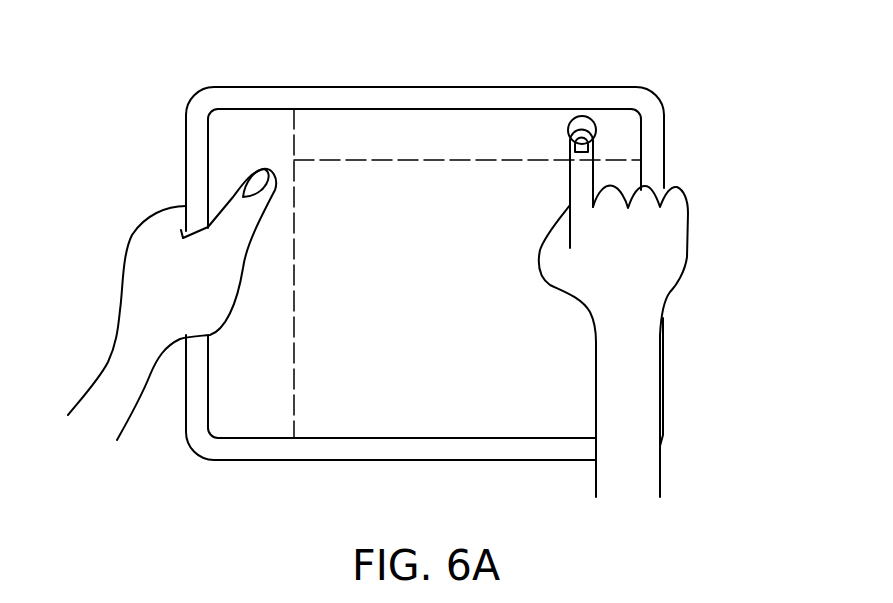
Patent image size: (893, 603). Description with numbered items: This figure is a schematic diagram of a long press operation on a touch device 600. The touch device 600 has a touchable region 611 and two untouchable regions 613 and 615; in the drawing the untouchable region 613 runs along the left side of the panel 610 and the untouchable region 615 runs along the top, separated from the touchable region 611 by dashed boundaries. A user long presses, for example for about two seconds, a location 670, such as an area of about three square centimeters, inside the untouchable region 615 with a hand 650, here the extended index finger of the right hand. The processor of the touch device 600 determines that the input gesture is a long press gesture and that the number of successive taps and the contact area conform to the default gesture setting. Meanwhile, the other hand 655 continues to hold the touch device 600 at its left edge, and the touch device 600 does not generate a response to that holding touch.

The touch device 600 is at (245, 86).
The touch display panel 610 is at (506, 108).
The touchable region 611 is at (508, 393).
The untouchable region 613 is at (267, 125).
The untouchable region 615 is at (418, 142).
The hand 650 is at (665, 246).
The hand 655 is at (125, 360).
The location 670 is at (582, 121).